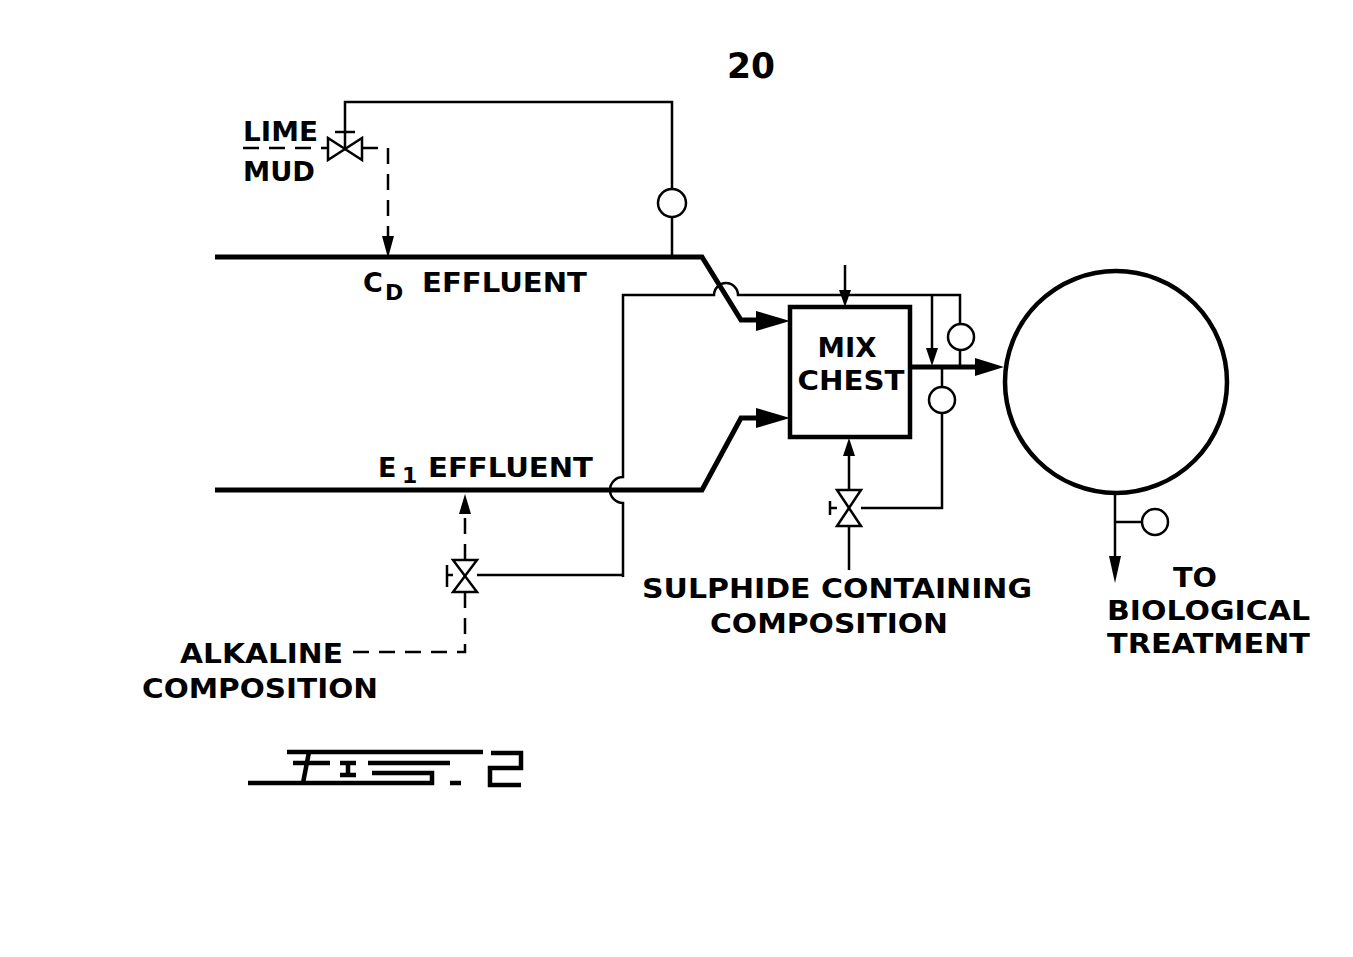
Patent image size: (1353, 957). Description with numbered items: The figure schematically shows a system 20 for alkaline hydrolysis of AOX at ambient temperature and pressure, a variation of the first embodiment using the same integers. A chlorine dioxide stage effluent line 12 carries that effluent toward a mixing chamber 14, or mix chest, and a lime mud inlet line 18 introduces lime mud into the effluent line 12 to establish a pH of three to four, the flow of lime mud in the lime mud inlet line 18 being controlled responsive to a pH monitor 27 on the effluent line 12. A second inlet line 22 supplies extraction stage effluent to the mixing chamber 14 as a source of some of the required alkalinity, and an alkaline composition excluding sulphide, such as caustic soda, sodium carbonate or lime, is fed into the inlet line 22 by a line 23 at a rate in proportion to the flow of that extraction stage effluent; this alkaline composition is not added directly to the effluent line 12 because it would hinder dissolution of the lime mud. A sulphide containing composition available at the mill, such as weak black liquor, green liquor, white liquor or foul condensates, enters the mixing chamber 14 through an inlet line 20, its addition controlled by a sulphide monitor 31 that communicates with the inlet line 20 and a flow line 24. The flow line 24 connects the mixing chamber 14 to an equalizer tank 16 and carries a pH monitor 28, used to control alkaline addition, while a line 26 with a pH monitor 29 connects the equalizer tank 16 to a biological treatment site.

The C_D effluent line 12 is at (290, 270).
The mixing chamber 14 is at (843, 273).
The equalizer tank 16 is at (1157, 382).
The lime mud inlet line 18 is at (352, 195).
The inlet line 20 is at (820, 504).
The inlet line 22 is at (674, 504).
The line 23 is at (485, 573).
The flow line 24 is at (930, 312).
The line 26 is at (1082, 538).
The pH monitor 27 is at (515, 179).
The pH monitor 28 is at (815, 420).
The pH monitor 29 is at (1181, 519).
The sulphide monitor 31 is at (934, 437).